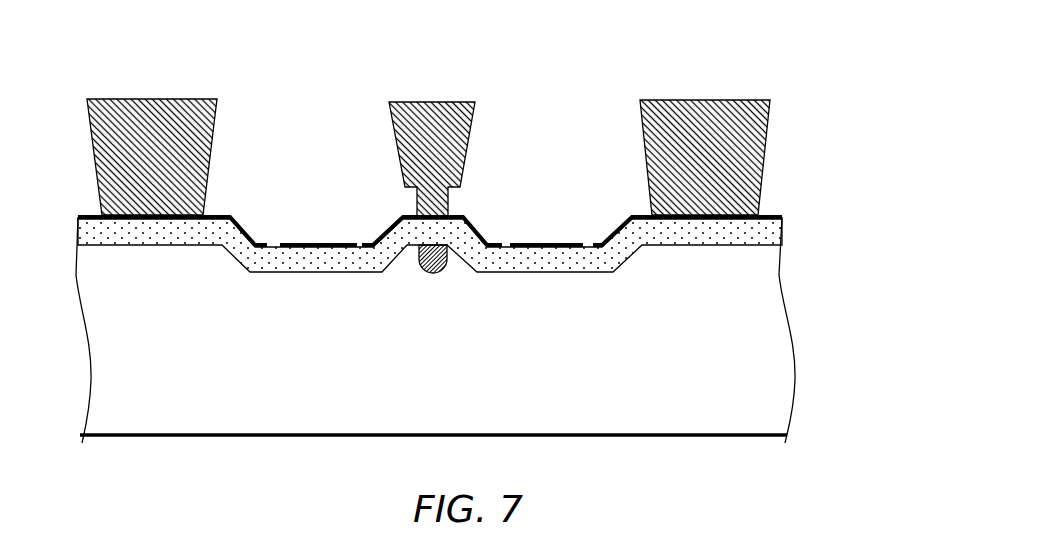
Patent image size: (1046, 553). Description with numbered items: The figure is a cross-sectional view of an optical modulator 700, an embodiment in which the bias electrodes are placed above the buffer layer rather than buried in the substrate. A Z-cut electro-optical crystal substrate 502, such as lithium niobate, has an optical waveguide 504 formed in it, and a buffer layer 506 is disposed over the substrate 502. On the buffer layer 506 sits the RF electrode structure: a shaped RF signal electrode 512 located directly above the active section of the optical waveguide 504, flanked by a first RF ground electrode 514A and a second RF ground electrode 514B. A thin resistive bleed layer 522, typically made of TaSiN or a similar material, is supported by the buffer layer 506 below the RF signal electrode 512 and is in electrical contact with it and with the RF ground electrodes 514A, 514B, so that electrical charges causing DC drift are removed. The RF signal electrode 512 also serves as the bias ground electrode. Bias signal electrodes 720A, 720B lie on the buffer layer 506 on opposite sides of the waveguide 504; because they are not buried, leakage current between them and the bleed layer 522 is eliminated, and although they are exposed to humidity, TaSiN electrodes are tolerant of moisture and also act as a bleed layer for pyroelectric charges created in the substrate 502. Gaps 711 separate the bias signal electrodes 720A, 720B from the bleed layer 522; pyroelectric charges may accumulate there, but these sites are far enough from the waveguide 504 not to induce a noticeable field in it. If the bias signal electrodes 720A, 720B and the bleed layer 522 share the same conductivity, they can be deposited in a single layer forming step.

The optical modulator 700 is at (615, 40).
The electro-optical crystal substrate 502 is at (745, 402).
The optical waveguide 504 is at (433, 292).
The buffer layer 506 is at (773, 228).
The RF signal electrode 512 is at (450, 144).
The first RF ground electrode 514A is at (172, 156).
The second RF ground electrode 514B is at (730, 156).
The bleed layer 522 is at (467, 219).
The gaps 711 is at (273, 238).
The first bias signal electrode 720A is at (317, 242).
The second bias signal electrode 720B is at (563, 242).